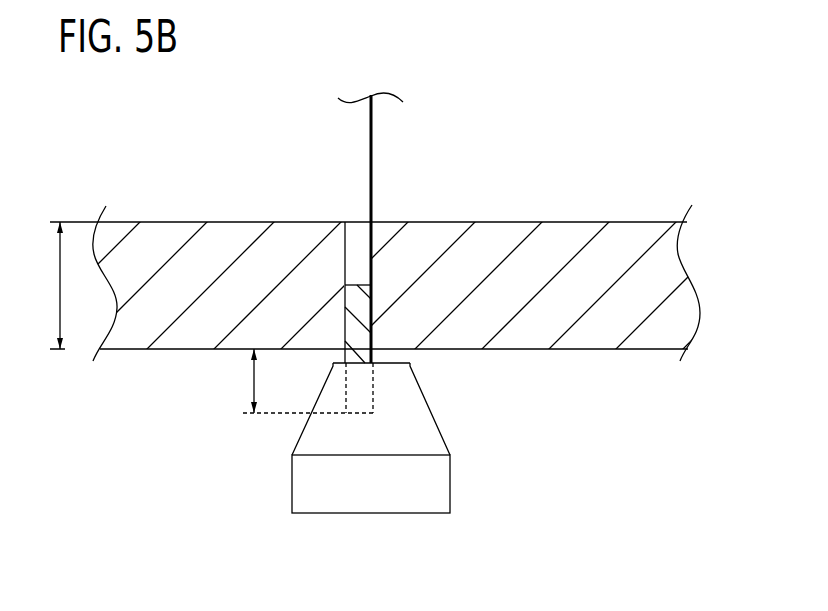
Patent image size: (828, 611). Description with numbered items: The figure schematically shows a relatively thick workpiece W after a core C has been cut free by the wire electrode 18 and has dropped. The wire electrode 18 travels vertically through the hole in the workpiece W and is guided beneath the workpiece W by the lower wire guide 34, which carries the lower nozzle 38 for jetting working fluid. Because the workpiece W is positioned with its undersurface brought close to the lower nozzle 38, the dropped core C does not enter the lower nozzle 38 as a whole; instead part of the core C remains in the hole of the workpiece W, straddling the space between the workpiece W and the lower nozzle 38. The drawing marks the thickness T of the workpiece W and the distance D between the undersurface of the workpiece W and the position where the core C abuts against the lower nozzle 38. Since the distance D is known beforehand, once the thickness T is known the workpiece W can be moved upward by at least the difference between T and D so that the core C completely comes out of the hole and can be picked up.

The wire electrode 18 is at (373, 162).
The lower wire guide 34 is at (433, 486).
The lower nozzle 38 is at (413, 405).
The workpiece W is at (563, 222).
The core C is at (357, 298).
The thickness of the workpiece T is at (51, 285).
The distance D is at (304, 381).